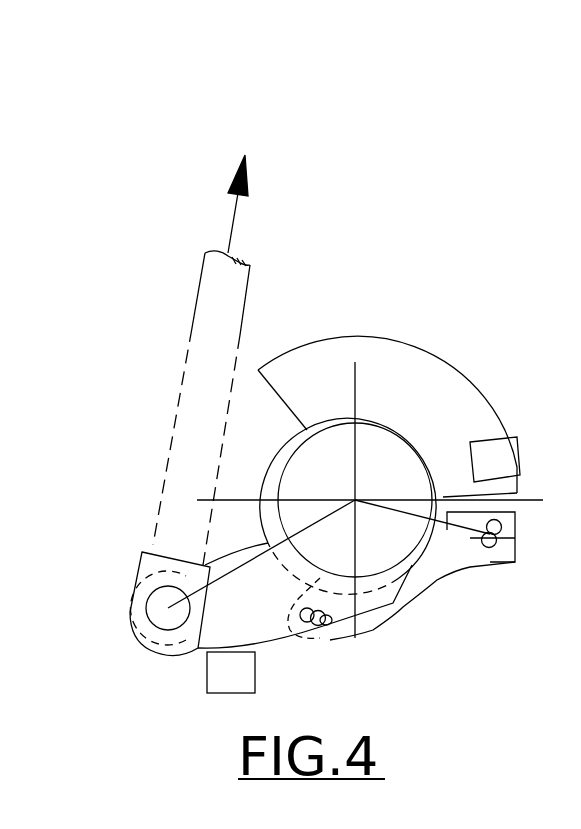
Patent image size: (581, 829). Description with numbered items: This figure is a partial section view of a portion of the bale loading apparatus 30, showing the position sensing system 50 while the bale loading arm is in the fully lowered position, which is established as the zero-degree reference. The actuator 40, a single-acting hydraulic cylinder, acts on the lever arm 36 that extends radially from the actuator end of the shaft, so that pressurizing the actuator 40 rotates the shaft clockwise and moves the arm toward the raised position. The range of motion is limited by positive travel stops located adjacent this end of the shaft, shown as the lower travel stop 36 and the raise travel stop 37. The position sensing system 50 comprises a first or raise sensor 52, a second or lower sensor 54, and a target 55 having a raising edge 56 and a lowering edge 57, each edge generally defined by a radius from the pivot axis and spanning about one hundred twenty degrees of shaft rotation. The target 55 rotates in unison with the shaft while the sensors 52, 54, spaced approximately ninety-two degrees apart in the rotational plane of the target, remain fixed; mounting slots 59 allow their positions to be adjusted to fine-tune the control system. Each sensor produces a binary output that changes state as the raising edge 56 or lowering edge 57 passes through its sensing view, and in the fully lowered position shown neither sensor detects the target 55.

The valve assembly 30 is at (580, 702).
The lower travel stop 36 is at (232, 675).
The raise travel stop 37 is at (483, 442).
The actuator 40 is at (240, 335).
The position sensing system 50 is at (452, 632).
The first sensor 52 is at (313, 622).
The second sensor 54 is at (482, 547).
The target 55 is at (385, 370).
The raising edge 56 is at (507, 495).
The lowering edge 57 is at (280, 403).
The mounting slots 59 is at (503, 562).